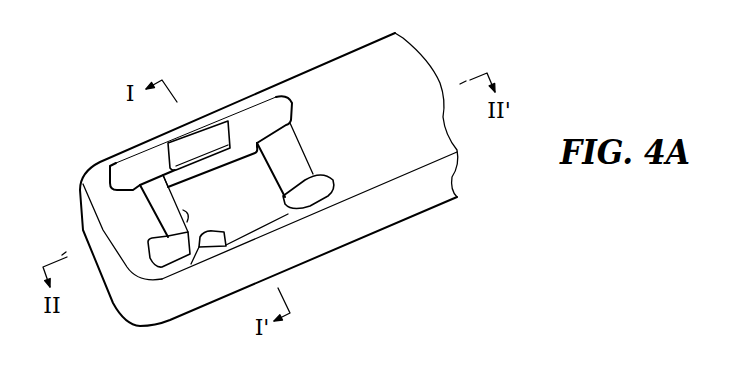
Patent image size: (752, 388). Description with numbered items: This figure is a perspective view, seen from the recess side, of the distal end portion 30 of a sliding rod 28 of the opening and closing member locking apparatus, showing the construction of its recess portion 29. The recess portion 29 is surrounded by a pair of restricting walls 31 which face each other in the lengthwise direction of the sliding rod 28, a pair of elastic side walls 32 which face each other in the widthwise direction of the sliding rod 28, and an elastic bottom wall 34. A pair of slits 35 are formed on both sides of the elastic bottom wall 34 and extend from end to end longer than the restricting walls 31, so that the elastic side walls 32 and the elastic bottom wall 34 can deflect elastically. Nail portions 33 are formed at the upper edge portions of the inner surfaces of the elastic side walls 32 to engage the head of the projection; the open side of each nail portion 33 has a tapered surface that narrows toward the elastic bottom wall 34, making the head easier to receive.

The sliding rod 28 is at (415, 221).
The recess portion 29 is at (258, 124).
The distal end portion 30 is at (228, 278).
The restricting walls 31 is at (265, 178).
The elastic side walls 32 is at (137, 166).
The nail portions 33 is at (198, 145).
The elastic bottom wall 34 is at (250, 203).
The slits 35 is at (243, 163).